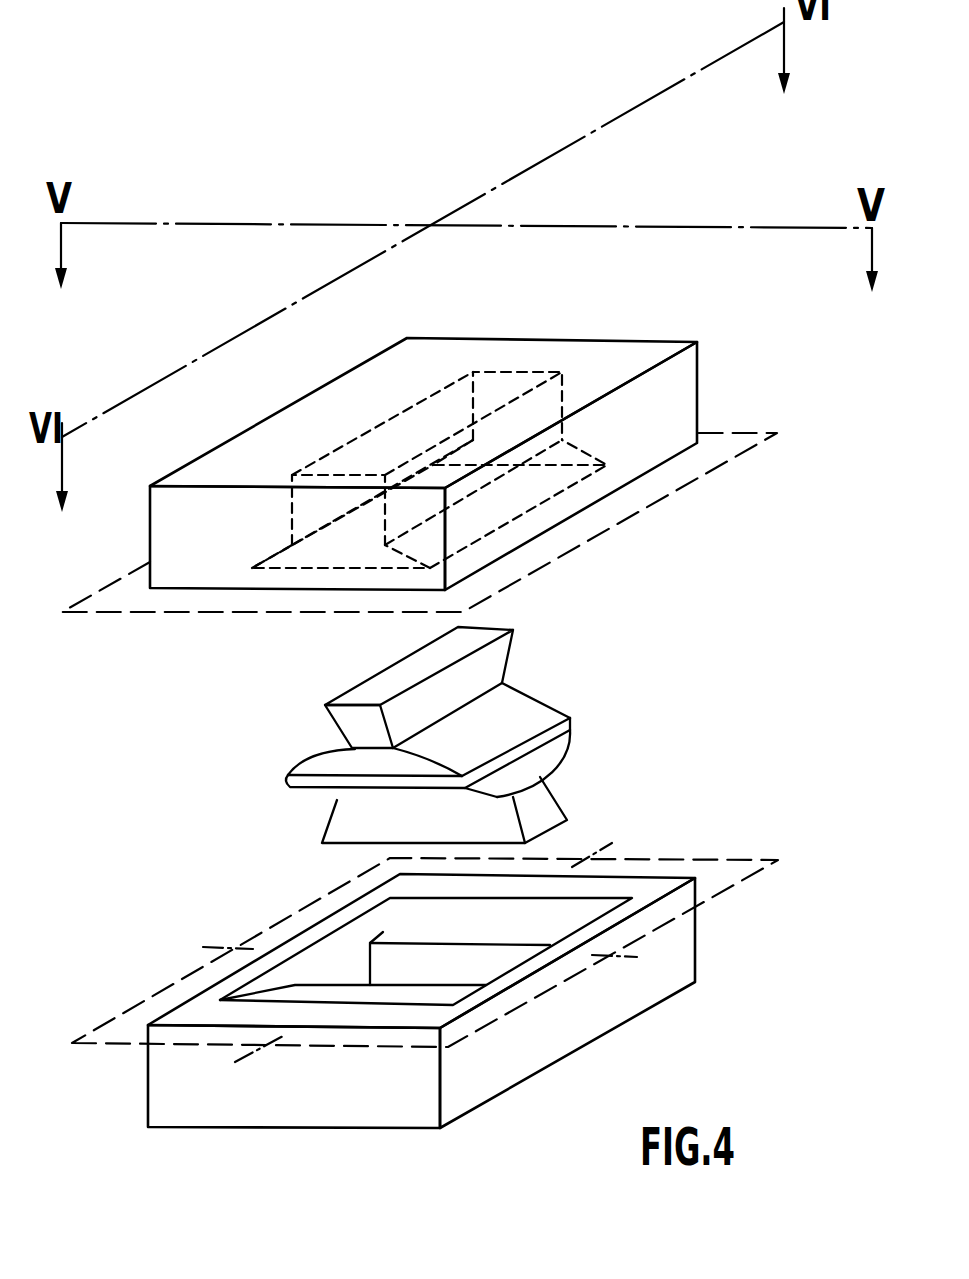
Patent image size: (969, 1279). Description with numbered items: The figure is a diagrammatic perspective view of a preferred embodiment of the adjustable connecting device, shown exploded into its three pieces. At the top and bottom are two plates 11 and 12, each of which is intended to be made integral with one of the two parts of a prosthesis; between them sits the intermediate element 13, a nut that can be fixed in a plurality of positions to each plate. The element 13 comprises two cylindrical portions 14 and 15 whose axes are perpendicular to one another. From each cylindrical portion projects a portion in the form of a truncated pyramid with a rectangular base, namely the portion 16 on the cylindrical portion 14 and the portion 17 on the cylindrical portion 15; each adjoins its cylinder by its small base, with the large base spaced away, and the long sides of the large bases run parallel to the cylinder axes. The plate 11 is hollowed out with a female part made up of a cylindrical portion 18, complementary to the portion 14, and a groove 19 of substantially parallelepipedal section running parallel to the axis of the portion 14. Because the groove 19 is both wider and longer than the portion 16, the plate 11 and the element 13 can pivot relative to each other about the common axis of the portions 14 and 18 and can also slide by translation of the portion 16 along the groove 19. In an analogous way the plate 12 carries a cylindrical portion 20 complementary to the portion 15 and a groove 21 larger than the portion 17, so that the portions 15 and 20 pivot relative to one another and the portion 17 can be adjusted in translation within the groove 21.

The plate 11 is at (446, 463).
The plate 12 is at (449, 1029).
The intermediate element 13 is at (413, 753).
The cylindrical portion 14 is at (523, 705).
The cylindrical portion 15 is at (382, 792).
The truncated-pyramid portion 16 is at (360, 727).
The truncated-pyramid portion 17 is at (537, 803).
The cylindrical portion 18 is at (596, 440).
The groove 19 is at (380, 511).
The cylindrical portion 20 is at (390, 923).
The groove 21 is at (473, 963).